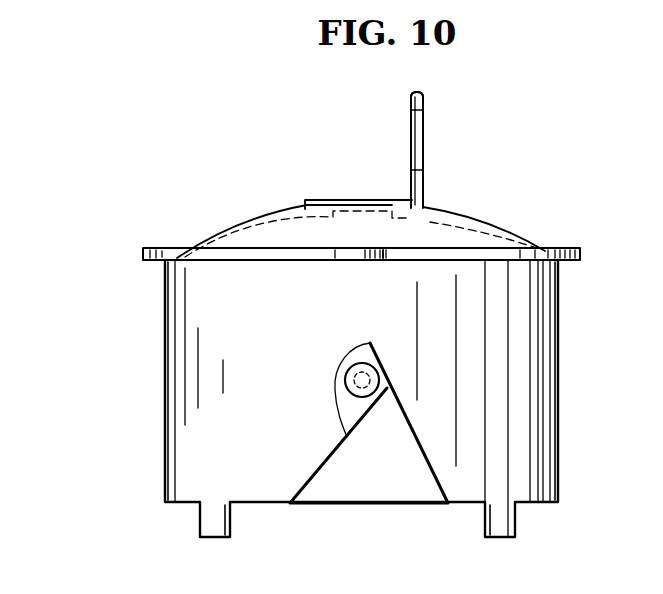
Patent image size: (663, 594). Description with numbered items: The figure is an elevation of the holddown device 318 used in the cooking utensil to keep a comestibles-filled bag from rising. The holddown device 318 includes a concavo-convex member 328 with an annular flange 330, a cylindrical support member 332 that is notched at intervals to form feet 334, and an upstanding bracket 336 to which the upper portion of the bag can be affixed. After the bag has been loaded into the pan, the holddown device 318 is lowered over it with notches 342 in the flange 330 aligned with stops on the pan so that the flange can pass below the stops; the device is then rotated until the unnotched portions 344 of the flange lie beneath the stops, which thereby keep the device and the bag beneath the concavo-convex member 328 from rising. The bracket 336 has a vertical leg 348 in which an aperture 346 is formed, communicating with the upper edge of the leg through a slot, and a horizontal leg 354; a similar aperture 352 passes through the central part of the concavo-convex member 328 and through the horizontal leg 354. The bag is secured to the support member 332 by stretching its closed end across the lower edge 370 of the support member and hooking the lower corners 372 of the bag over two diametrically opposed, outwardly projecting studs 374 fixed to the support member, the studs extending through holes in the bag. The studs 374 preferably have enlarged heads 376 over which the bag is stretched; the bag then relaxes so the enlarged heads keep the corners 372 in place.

The holddown device 318 is at (145, 343).
The concavo-convex member 328 is at (238, 221).
The annular flange 330 is at (143, 253).
The cylindrical support member 332 is at (545, 325).
The feet 334 is at (226, 524).
The upstanding bracket 336 is at (442, 148).
The notches 342 is at (384, 260).
The unnotched portions 344 is at (213, 247).
The aperture 346 is at (425, 116).
The vertical leg 348 is at (413, 95).
The aperture 352 is at (345, 200).
The horizontal leg 354 is at (305, 203).
The lower edge 370 is at (540, 505).
The lower corners 372 is at (372, 344).
The studs 374 is at (351, 359).
The enlarged heads 376 is at (345, 378).